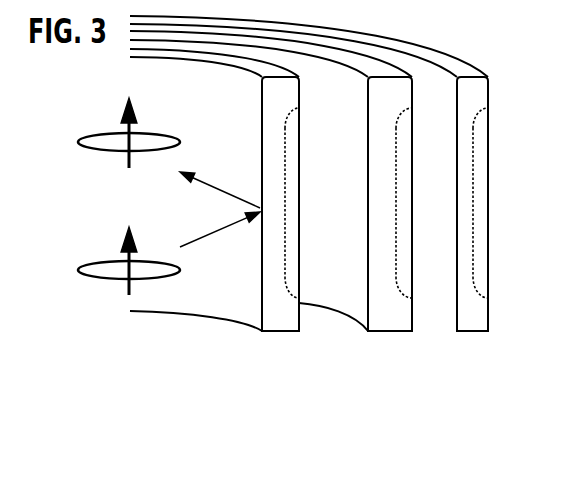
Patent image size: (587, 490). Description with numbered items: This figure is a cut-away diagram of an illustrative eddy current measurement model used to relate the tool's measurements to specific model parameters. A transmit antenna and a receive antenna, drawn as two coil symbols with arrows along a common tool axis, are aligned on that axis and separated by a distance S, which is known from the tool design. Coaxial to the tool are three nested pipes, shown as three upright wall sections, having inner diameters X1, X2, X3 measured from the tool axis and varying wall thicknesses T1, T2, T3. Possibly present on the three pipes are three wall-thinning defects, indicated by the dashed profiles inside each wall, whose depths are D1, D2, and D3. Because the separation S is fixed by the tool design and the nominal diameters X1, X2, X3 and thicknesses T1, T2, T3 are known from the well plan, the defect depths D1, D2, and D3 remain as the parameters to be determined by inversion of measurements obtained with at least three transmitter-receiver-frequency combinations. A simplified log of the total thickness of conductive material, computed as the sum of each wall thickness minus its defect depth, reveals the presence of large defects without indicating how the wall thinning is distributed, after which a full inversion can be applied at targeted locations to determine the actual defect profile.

The separation distance S is at (50, 142).
The first defect depth D1 is at (265, 94).
The second defect depth D2 is at (376, 94).
The third defect depth D3 is at (452, 103).
The first pipe wall thickness T1 is at (262, 333).
The second pipe wall thickness T2 is at (368, 333).
The third pipe wall thickness T3 is at (457, 333).
The first pipe inner diameter X1 is at (132, 458).
The second pipe inner diameter X2 is at (368, 402).
The third pipe inner diameter X3 is at (457, 447).